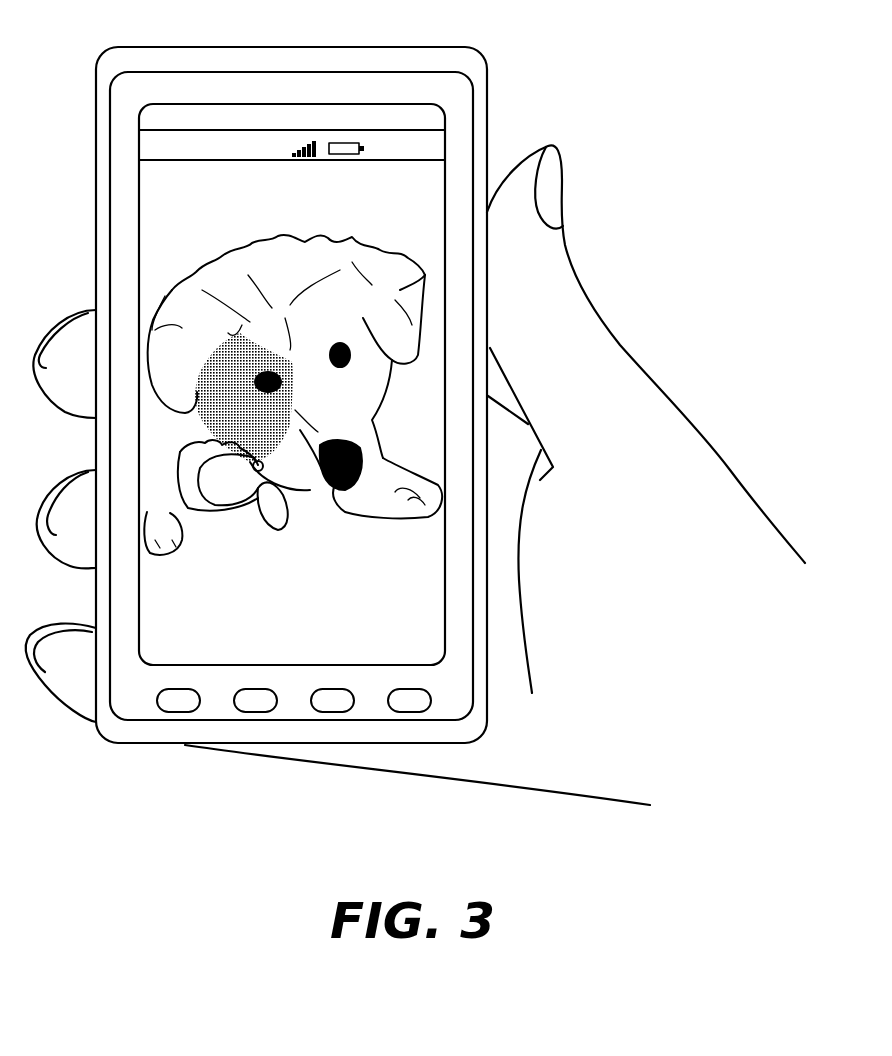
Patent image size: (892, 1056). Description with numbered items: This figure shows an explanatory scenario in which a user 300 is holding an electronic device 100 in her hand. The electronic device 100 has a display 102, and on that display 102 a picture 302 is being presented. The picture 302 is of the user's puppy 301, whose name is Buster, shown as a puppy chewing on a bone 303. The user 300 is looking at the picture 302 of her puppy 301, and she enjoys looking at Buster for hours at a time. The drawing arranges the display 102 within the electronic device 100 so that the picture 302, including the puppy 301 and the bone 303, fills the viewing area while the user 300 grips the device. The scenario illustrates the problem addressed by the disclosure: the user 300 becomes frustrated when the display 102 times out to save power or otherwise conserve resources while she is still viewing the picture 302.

The electronic device 100 is at (507, 95).
The display 102 is at (139, 177).
The user 300 is at (633, 430).
The puppy 301 is at (327, 270).
The picture 302 is at (178, 197).
The bone 303 is at (277, 513).